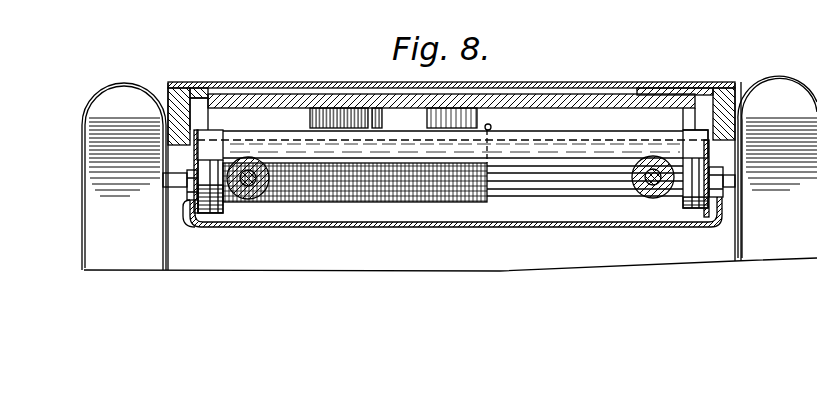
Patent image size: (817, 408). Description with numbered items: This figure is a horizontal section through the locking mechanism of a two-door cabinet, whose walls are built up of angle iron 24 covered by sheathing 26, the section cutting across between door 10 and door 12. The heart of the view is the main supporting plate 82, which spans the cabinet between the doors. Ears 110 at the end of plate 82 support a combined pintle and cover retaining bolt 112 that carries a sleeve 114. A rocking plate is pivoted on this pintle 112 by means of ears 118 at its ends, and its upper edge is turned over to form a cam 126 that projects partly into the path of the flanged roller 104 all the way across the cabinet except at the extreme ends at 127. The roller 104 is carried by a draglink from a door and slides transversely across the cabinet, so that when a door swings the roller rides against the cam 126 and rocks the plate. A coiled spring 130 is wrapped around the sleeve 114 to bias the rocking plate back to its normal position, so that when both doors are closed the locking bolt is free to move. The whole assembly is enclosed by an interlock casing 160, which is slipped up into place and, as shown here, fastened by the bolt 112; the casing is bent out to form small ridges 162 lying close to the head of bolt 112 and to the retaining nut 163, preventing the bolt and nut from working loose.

The door 10 is at (772, 82).
The door 12 is at (124, 83).
The angle iron 24 is at (719, 88).
The sheathing 26 is at (669, 84).
The main supporting plate 82 is at (322, 102).
The flanged roller 104 is at (265, 166).
The ears 110 is at (690, 118).
The combined pintle and cover retaining bolt 112 is at (186, 193).
The sleeve 114 is at (572, 190).
The ears 118 is at (698, 163).
The cam 126 is at (539, 150).
The extreme ends 127 is at (274, 158).
The coiled spring 130 is at (362, 176).
The interlock casing 160 is at (452, 224).
The ridges 162 is at (190, 217).
The retaining nut 163 is at (709, 200).